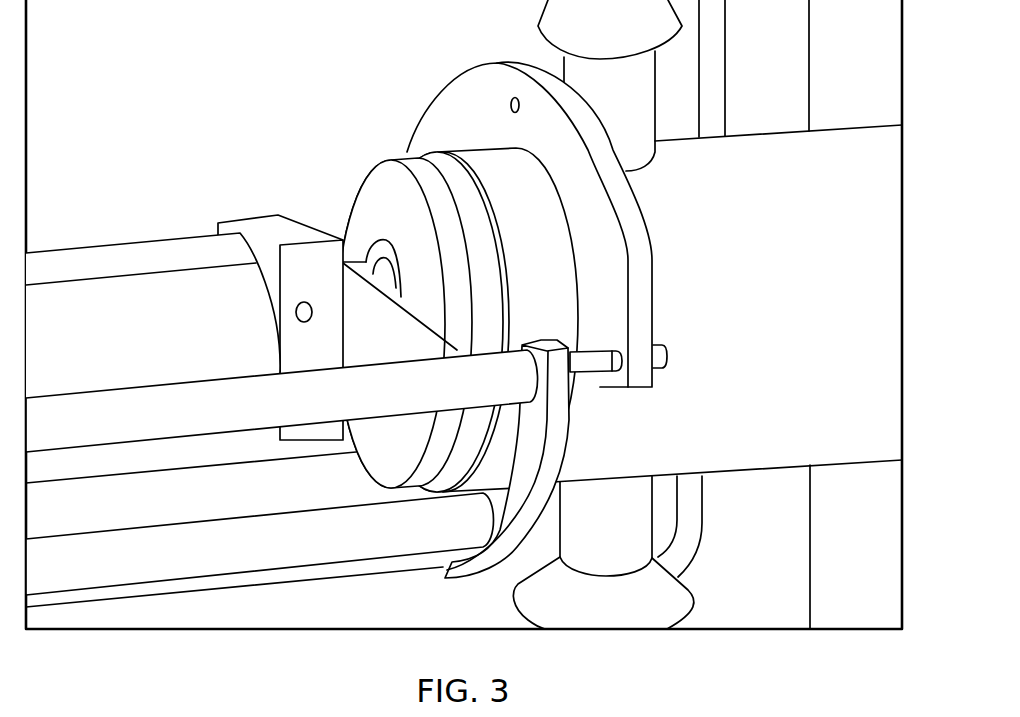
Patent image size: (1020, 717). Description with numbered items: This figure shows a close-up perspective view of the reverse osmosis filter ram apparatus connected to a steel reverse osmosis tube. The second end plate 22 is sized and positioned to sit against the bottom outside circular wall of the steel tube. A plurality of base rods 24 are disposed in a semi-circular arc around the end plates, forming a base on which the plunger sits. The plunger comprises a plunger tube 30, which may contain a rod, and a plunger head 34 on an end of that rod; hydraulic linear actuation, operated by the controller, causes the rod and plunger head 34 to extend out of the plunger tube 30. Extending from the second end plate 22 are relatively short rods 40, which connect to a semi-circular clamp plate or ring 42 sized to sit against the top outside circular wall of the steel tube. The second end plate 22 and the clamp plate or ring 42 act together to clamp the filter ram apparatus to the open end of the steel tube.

The second end plate 22 is at (463, 568).
The base rods 24 is at (75, 420).
The plunger tube 30 is at (100, 241).
The plunger head 34 is at (410, 180).
The short rods 40 is at (590, 367).
The clamp plate or ring 42 is at (634, 258).